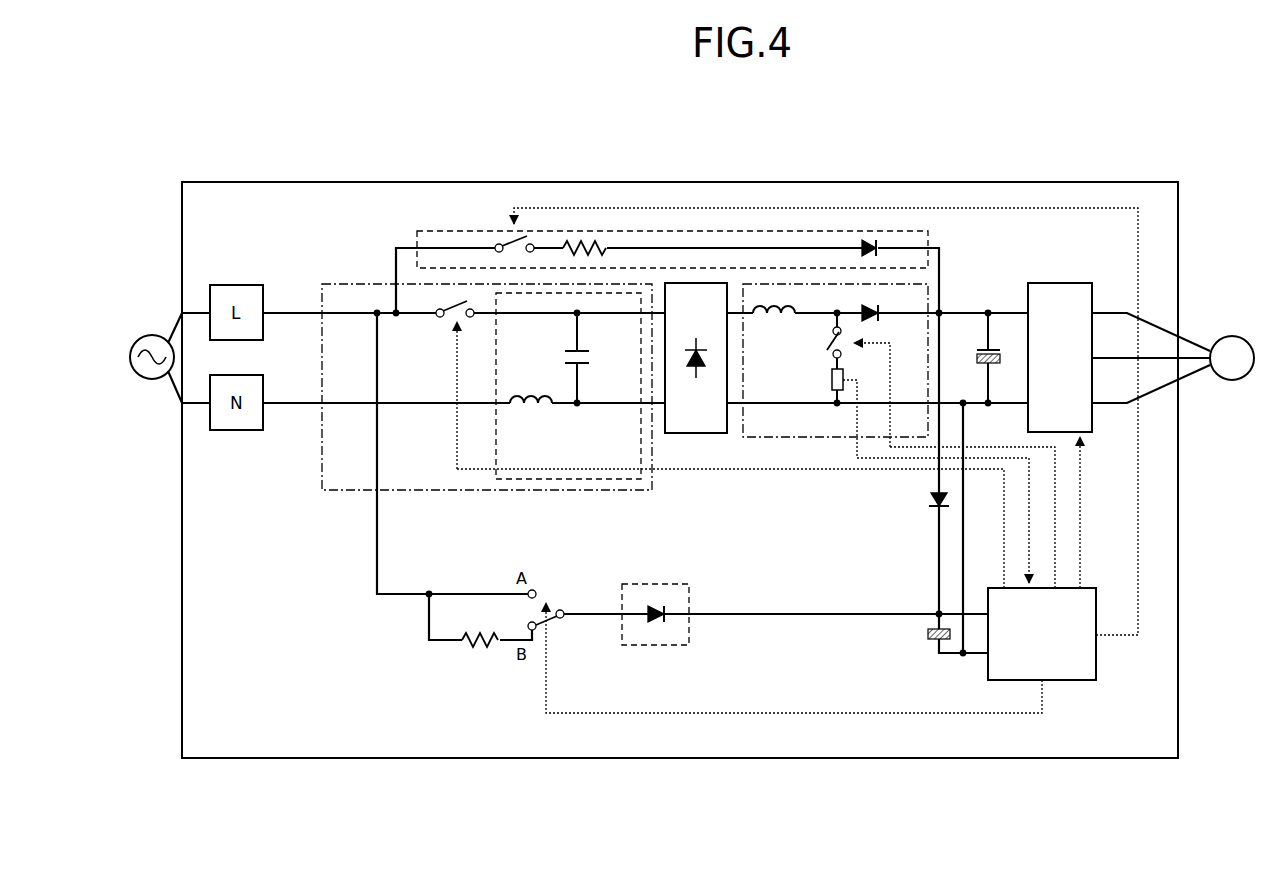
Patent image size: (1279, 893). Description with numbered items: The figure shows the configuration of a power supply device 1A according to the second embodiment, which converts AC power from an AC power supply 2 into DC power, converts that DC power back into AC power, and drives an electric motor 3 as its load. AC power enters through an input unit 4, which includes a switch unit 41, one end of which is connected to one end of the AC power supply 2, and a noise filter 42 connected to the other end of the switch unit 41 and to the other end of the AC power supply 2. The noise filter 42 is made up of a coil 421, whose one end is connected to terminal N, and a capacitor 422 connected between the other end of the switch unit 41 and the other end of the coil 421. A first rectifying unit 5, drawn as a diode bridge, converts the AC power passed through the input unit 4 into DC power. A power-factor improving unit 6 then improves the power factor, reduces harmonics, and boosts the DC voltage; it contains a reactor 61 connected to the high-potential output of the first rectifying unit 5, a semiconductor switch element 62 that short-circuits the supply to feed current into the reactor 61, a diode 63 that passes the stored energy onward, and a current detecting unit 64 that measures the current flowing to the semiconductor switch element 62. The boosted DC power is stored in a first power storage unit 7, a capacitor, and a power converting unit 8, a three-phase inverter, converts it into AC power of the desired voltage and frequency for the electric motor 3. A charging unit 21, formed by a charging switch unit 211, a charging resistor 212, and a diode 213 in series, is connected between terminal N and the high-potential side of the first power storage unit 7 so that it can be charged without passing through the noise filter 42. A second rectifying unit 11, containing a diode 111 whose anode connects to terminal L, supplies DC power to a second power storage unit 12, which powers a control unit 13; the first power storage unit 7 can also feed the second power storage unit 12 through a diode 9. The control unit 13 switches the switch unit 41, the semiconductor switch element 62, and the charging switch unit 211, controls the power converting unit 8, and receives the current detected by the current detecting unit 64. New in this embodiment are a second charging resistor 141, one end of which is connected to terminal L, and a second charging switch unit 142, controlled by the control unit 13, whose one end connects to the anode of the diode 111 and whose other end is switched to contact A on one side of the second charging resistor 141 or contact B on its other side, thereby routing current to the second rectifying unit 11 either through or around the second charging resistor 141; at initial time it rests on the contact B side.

The power supply device 1A is at (1097, 182).
The AC power supply 2 is at (148, 335).
The electric motor 3 is at (1228, 336).
The input unit 4 is at (356, 284).
The switch unit 41 is at (440, 322).
The noise filter 42 is at (496, 445).
The coil 421 is at (532, 412).
The capacitor 422 is at (580, 352).
The charging unit 21 is at (434, 231).
The charging switch unit 211 is at (499, 241).
The charging resistor 212 is at (585, 241).
The diode 213 is at (868, 241).
The first rectifying unit 5 is at (705, 434).
The power-factor improving unit 6 is at (750, 440).
The reactor 61 is at (775, 328).
The semiconductor switch element 62 is at (830, 355).
The diode 63 is at (880, 322).
The current detecting unit 64 is at (841, 395).
The first power storage unit 7 is at (992, 348).
The power converting unit 8 is at (1065, 283).
The diode 9 is at (932, 498).
The second rectifying unit 11 is at (670, 584).
The diode 111 is at (655, 628).
The second power storage unit 12 is at (929, 636).
The control unit 13 is at (1098, 655).
The second charging resistor 141 is at (487, 652).
The second charging switch unit 142 is at (560, 628).